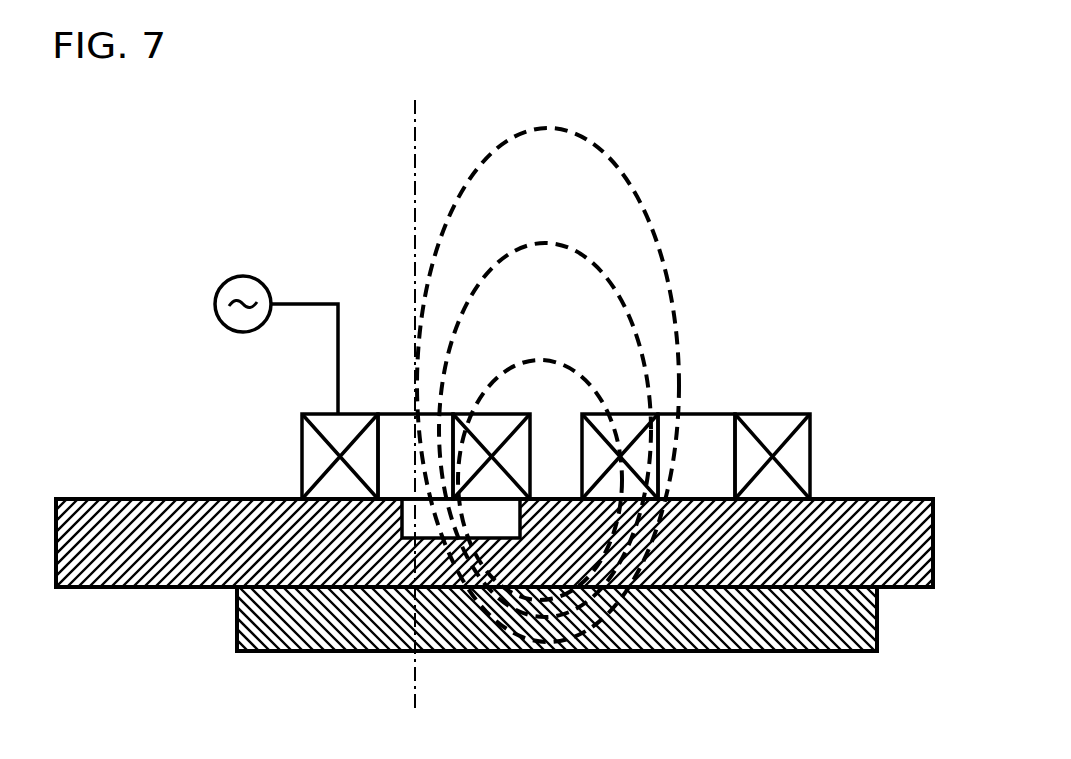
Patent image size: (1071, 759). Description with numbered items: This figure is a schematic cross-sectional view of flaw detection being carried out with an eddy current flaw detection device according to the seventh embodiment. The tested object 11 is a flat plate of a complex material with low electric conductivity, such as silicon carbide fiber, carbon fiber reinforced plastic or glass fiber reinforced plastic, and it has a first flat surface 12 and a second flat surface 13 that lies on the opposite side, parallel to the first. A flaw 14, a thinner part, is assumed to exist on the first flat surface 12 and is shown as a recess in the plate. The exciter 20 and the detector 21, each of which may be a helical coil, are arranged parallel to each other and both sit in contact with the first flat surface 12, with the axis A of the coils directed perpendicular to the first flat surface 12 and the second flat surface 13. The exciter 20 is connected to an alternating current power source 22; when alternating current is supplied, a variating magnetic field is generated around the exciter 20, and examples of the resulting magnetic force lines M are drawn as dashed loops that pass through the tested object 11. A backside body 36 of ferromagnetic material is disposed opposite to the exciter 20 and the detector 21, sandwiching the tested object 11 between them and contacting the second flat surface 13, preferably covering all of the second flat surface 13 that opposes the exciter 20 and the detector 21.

The tested object 11 is at (90, 488).
The first flat surface 12 is at (208, 498).
The second flat surface 13 is at (201, 589).
The flaw 14 is at (502, 511).
The exciter 20 is at (314, 461).
The detector 21 is at (802, 451).
The alternating current power source 22 is at (237, 276).
The backside body 36 is at (318, 641).
The magnetic force lines M is at (660, 270).
The axis A is at (412, 682).